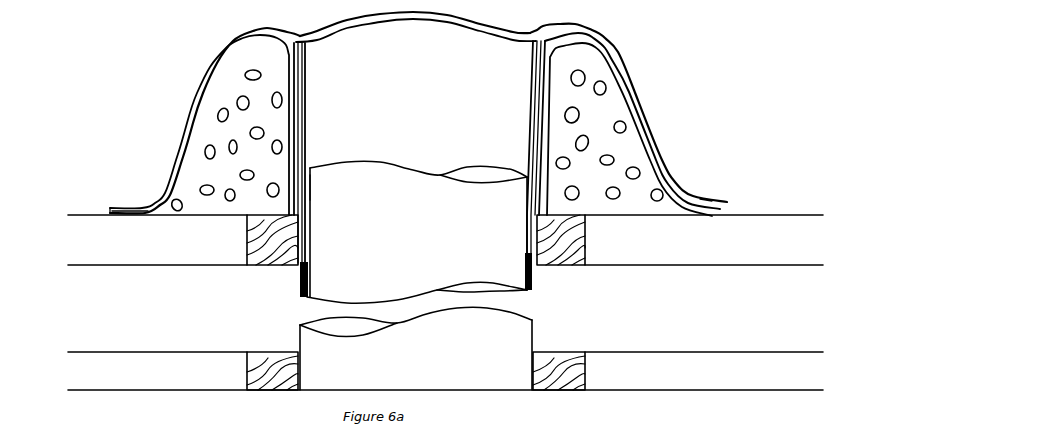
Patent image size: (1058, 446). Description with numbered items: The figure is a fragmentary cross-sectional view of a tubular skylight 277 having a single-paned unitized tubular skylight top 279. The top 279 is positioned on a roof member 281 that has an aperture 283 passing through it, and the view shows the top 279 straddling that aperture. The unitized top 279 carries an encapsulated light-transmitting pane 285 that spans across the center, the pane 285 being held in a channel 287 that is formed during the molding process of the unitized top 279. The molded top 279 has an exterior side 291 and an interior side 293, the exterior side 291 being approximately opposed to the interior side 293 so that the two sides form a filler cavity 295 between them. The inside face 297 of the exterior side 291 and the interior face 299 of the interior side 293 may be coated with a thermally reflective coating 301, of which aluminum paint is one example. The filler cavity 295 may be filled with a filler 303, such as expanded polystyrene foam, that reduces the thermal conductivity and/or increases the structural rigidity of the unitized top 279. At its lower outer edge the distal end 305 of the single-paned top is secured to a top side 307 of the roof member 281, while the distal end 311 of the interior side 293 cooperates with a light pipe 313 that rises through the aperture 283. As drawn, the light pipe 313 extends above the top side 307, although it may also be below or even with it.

The tubular skylight 277 is at (336, 46).
The unitized tubular skylight top 279 is at (226, 46).
The roof member 281 is at (168, 252).
The aperture 283 is at (412, 268).
The light-transmitting pane 285 is at (410, 28).
The channel 287 is at (598, 32).
The exterior side 291 is at (654, 128).
The interior side 293 is at (527, 128).
The filler cavity 295 is at (600, 132).
The inside face of the exterior side 297 is at (643, 143).
The interior face of the interior side 299 is at (534, 103).
The thermally reflective coating 301 is at (547, 90).
The filler 303 is at (620, 185).
The distal end 305 is at (135, 195).
The top side 307 is at (100, 207).
The distal end of the interior side 311 is at (293, 207).
The light pipe 313 is at (316, 195).